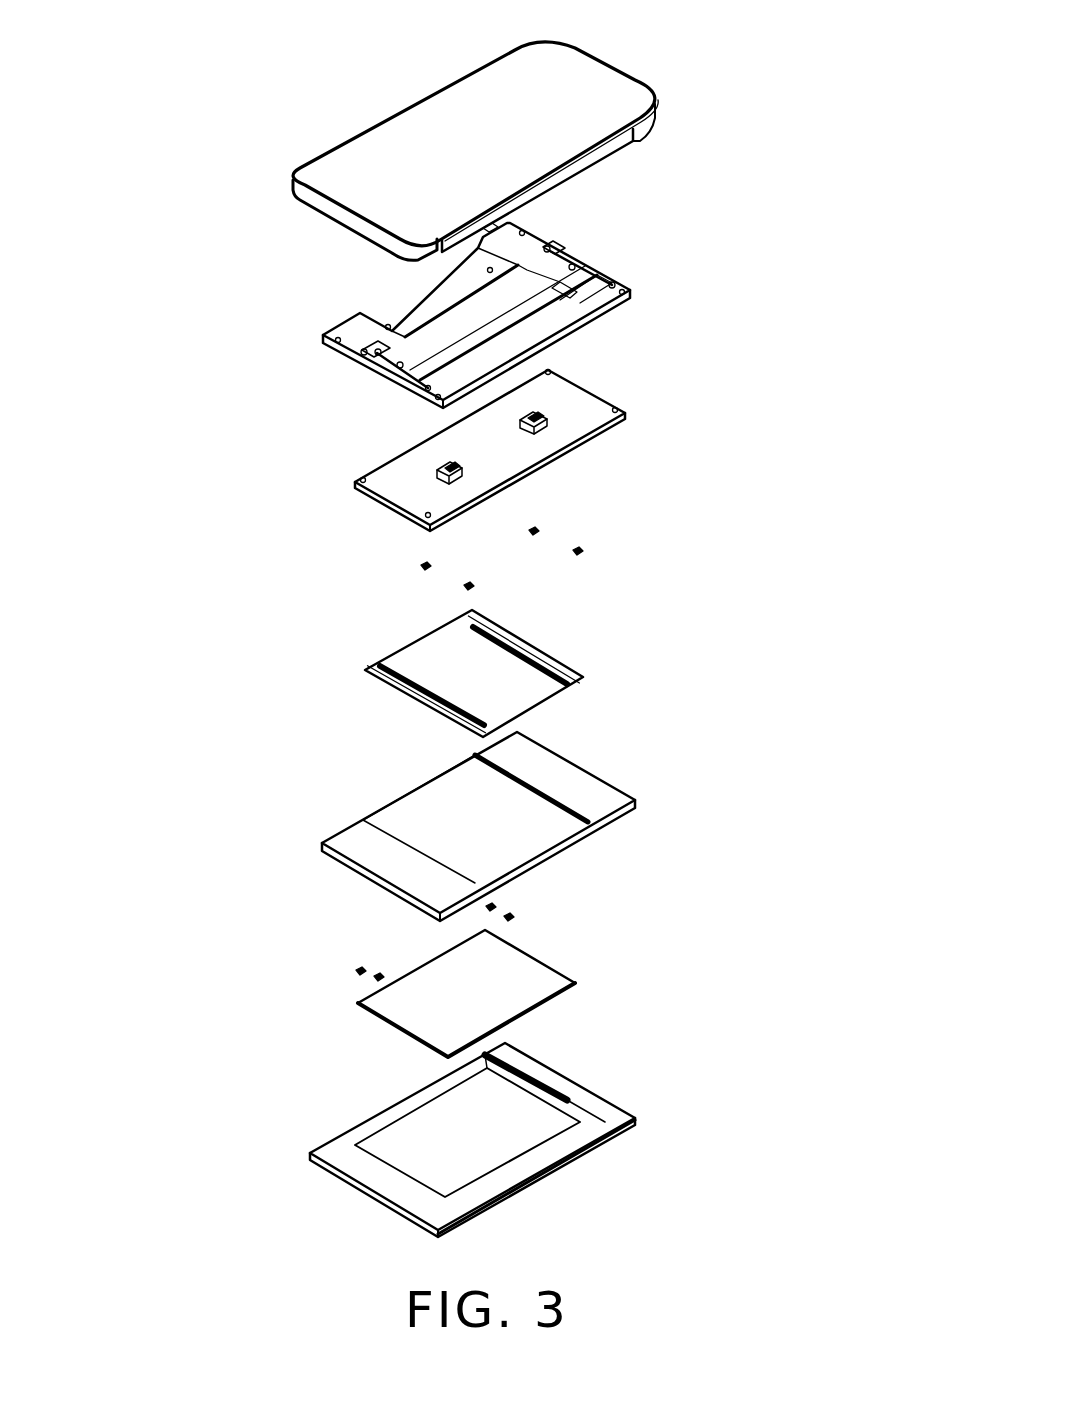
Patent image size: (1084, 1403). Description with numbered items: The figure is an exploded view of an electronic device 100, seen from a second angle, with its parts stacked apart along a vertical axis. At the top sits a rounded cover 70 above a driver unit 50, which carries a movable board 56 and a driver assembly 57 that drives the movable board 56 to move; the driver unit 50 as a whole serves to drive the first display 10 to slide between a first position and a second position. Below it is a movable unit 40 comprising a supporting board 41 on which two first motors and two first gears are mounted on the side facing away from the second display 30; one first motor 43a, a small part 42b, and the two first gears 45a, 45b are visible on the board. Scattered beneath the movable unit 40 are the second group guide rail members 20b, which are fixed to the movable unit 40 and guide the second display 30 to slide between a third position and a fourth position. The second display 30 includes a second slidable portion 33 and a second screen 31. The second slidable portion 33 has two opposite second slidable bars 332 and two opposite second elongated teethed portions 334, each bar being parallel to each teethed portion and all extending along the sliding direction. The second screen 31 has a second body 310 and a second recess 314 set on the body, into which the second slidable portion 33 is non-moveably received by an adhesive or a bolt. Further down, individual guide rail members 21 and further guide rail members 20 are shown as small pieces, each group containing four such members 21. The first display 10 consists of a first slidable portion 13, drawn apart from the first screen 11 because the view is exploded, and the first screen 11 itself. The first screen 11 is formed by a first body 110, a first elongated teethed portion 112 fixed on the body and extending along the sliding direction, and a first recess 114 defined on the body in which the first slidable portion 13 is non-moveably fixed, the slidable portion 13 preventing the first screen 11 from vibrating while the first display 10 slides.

The electronic device 100 is at (257, 83).
The cover 70 is at (613, 90).
The driver unit 50 is at (537, 240).
The movable board 56 is at (598, 300).
The driver assembly 57 is at (372, 357).
The movable unit 40 is at (473, 464).
The supporting board 41 is at (580, 408).
The connector 42b is at (438, 467).
The first gear 45b is at (448, 460).
The first motor 43a is at (547, 420).
The first gear 45a is at (535, 428).
The second group guide rail members 20b is at (582, 552).
The second display 30 is at (584, 751).
The second slidable portion 33 is at (571, 659).
The second slidable bars 332 is at (562, 662).
The second elongated teethed portions 334 is at (578, 673).
The second screen 31 is at (555, 826).
The second body 310 is at (602, 792).
The second recess 314 is at (547, 827).
The guide rail member 21 is at (512, 915).
The fastening members 20 is at (358, 968).
The first display 10 is at (562, 1074).
The first slidable portion 13 is at (542, 985).
The first screen 11 is at (535, 1123).
The first elongated teethed portion 112 is at (557, 1097).
The first recess 114 is at (557, 1127).
The first body 110 is at (580, 1137).